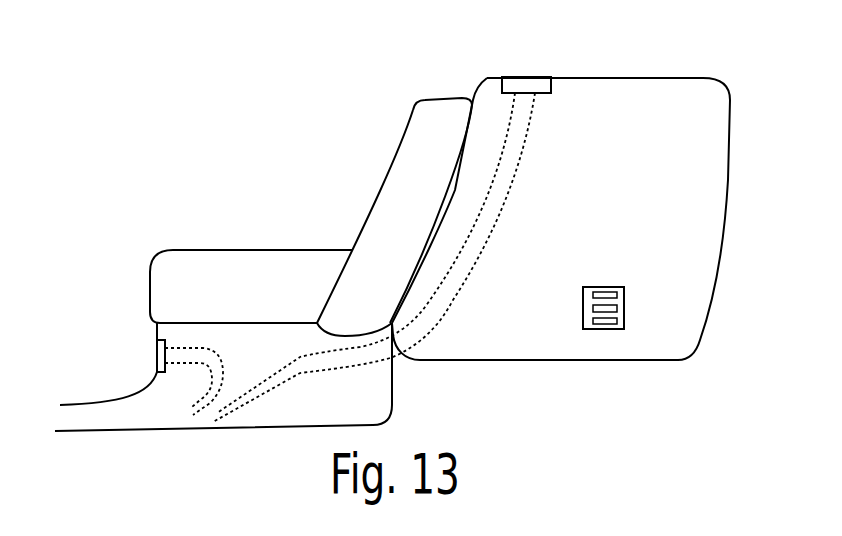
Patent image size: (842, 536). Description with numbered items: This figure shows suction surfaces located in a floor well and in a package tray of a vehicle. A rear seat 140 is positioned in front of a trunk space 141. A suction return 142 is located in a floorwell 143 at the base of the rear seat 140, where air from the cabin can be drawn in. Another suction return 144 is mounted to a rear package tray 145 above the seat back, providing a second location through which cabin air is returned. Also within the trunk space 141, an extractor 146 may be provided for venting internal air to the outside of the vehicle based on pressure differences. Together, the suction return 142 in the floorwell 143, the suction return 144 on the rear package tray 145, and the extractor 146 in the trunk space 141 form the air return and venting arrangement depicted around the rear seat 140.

The rear seat 140 is at (284, 250).
The trunk space 141 is at (698, 201).
The suction return 142 is at (157, 353).
The floorwell 143 is at (108, 385).
The suction return 144 is at (532, 77).
The rear package tray 145 is at (638, 77).
The extractor 146 is at (601, 287).